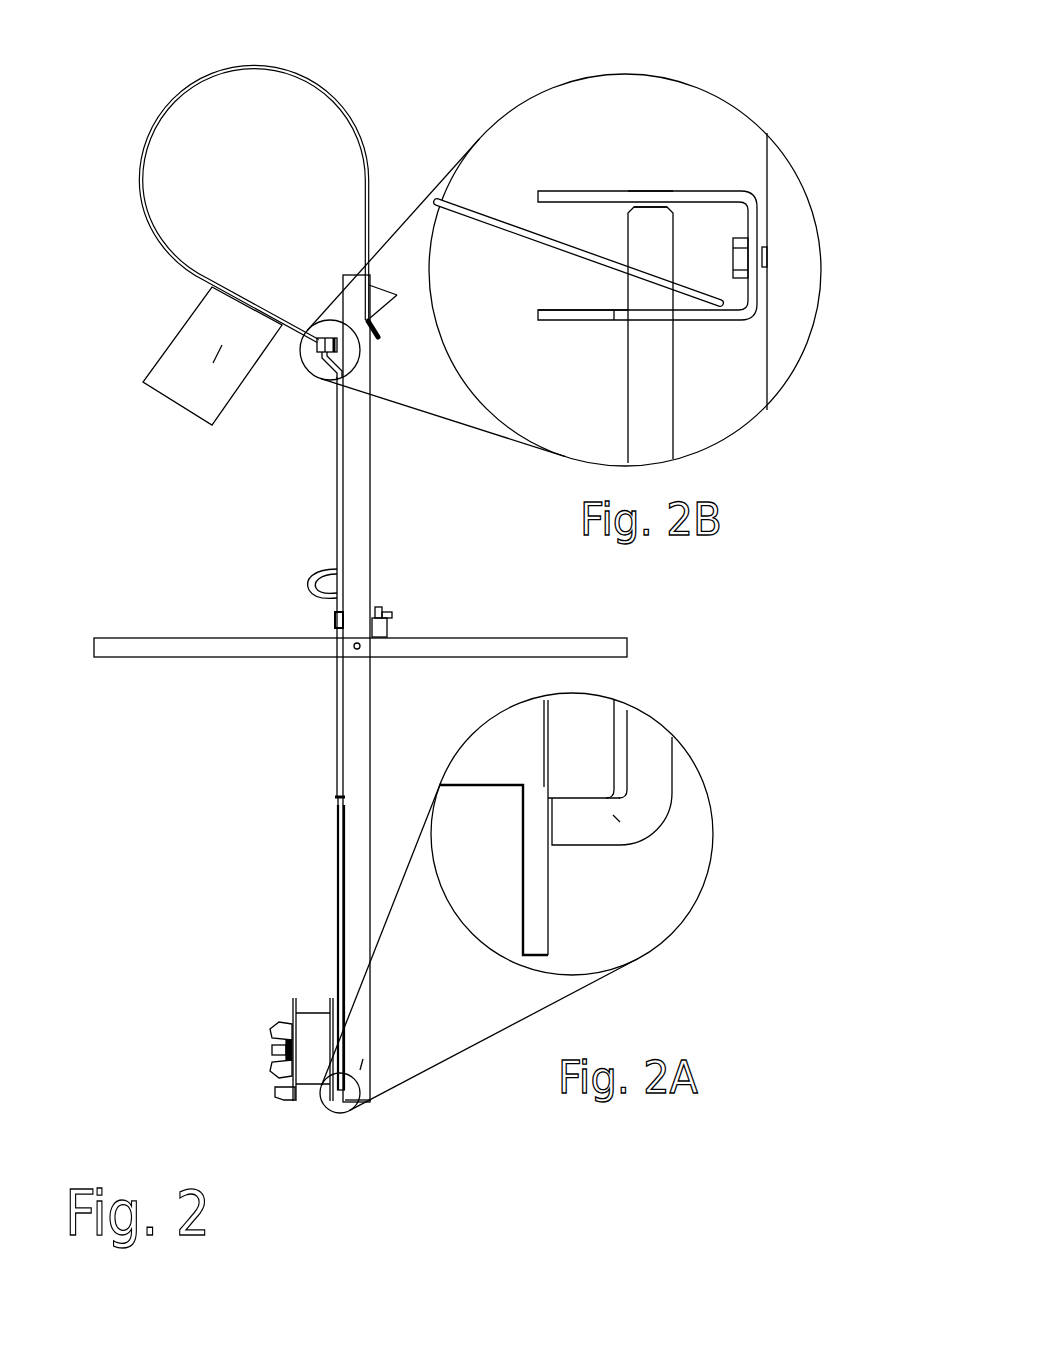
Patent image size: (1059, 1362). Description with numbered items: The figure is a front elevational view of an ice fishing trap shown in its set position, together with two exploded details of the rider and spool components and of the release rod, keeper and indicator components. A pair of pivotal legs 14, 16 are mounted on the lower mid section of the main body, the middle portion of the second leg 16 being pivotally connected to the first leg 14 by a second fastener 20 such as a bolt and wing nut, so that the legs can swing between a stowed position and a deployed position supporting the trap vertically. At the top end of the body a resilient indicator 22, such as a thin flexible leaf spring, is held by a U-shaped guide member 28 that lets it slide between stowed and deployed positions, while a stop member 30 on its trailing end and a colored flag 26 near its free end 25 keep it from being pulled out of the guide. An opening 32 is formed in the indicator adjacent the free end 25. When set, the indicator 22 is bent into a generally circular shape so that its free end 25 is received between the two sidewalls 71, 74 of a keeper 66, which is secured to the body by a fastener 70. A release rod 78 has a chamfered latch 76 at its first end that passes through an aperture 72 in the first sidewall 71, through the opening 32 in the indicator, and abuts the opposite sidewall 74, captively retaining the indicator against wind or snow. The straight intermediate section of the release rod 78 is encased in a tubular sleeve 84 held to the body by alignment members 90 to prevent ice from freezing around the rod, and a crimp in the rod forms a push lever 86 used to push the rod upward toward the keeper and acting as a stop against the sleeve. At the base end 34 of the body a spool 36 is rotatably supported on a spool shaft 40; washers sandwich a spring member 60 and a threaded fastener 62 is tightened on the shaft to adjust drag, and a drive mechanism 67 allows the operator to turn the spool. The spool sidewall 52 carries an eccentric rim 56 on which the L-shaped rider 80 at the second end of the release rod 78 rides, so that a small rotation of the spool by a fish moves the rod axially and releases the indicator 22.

In FIG. 2, the leg 14 is at (143, 638).
In FIG. 2, the leg 16 is at (388, 625).
In FIG. 2, the second fastener 20 is at (382, 612).
In FIG. 2, the resilient indicator 22 is at (162, 118).
In FIG. 2B, the free end 25 is at (722, 298).
In FIG. 2, the flag 26 is at (210, 363).
In FIG. 2, the U-shaped guide member 28 is at (397, 295).
In FIG. 2, the stop member 30 is at (379, 339).
In FIG. 2B, the opening 32 is at (678, 290).
In FIG. 2, the base end 34 is at (362, 1065).
In FIG. 2, the spool 36 is at (290, 1003).
In FIG. 2, the spool shaft 40 is at (272, 1049).
In FIG. 2A, the sidewall 52 is at (548, 759).
In FIG. 2A, the eccentric rim 56 is at (582, 798).
In FIG. 2, the spring member 60 is at (296, 1070).
In FIG. 2, the threaded fastener 62 is at (270, 1032).
In FIG. 2B, the keeper 66 is at (633, 199).
In FIG. 2, the drive mechanism 67 is at (276, 1094).
In FIG. 2B, the fastener 70 is at (743, 238).
In FIG. 2B, the first sidewall 71 is at (563, 319).
In FIG. 2B, the aperture 72 is at (622, 321).
In FIG. 2B, the opposite sidewall 74 is at (590, 191).
In FIG. 2B, the latch 76 is at (650, 233).
In FIG. 2, the release rod 78 is at (337, 885).
In FIG. 2B, the release rod 78 is at (677, 425).
In FIG. 2A, the rider 80 is at (617, 818).
In FIG. 2, the tubular sleeve 84 is at (335, 723).
In FIG. 2, the push lever 86 is at (310, 588).
In FIG. 2, the alignment members 90 is at (337, 383).